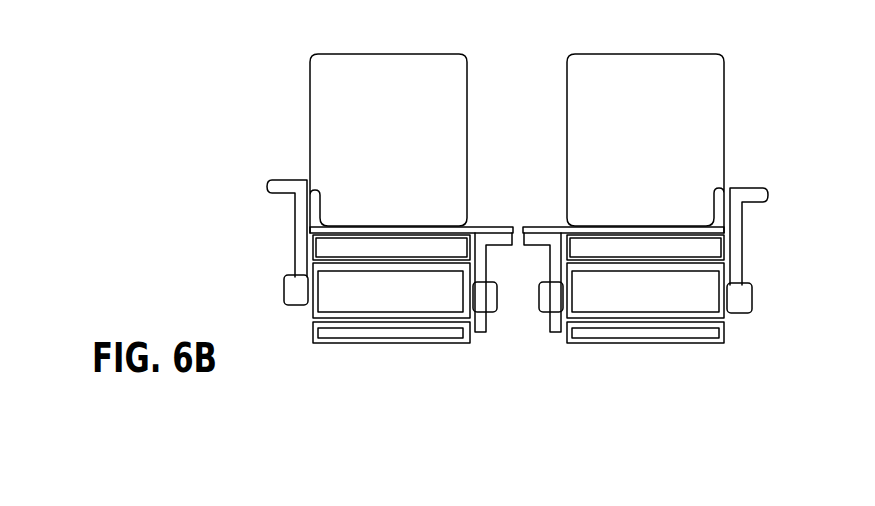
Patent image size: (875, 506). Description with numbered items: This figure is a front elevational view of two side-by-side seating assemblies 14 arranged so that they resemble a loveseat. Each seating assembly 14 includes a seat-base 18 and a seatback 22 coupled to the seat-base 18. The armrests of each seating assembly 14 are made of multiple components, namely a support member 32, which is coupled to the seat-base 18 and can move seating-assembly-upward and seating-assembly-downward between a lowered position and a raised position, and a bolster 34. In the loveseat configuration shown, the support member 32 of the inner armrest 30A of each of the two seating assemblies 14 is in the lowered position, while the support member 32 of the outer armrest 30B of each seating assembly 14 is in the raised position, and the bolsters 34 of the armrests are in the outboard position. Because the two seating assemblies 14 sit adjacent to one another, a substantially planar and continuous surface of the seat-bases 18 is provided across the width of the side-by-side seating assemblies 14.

The seating assembly 14 is at (521, 171).
The seatback 22 is at (368, 118).
The seat-base 18 is at (405, 254).
The inner armrest 30A is at (546, 256).
The outer armrest 30B is at (262, 190).
The support member 32 is at (302, 255).
The bolster 34 is at (795, 208).